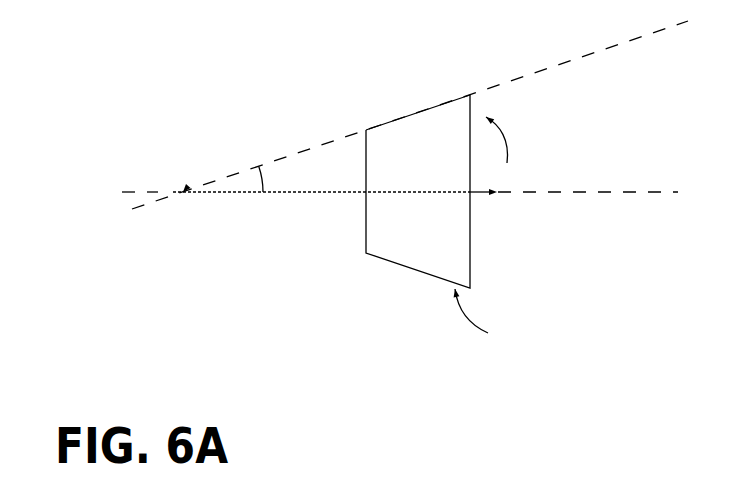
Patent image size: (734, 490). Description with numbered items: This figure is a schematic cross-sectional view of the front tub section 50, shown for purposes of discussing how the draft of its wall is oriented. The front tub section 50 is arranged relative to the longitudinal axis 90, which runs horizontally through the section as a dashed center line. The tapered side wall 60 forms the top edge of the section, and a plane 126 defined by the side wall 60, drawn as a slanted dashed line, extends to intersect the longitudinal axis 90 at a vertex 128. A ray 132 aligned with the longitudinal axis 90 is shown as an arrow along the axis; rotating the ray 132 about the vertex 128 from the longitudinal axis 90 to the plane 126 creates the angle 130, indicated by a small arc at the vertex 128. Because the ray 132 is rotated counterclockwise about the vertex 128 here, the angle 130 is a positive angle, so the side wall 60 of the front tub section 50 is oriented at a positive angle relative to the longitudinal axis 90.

The longitudinal axis 90 is at (153, 191).
The plane 126 is at (163, 200).
The vertex 128 is at (185, 190).
The angle 130 is at (262, 176).
The front tub section 50 is at (444, 225).
The side wall 60 is at (453, 97).
The ray 132 is at (477, 194).